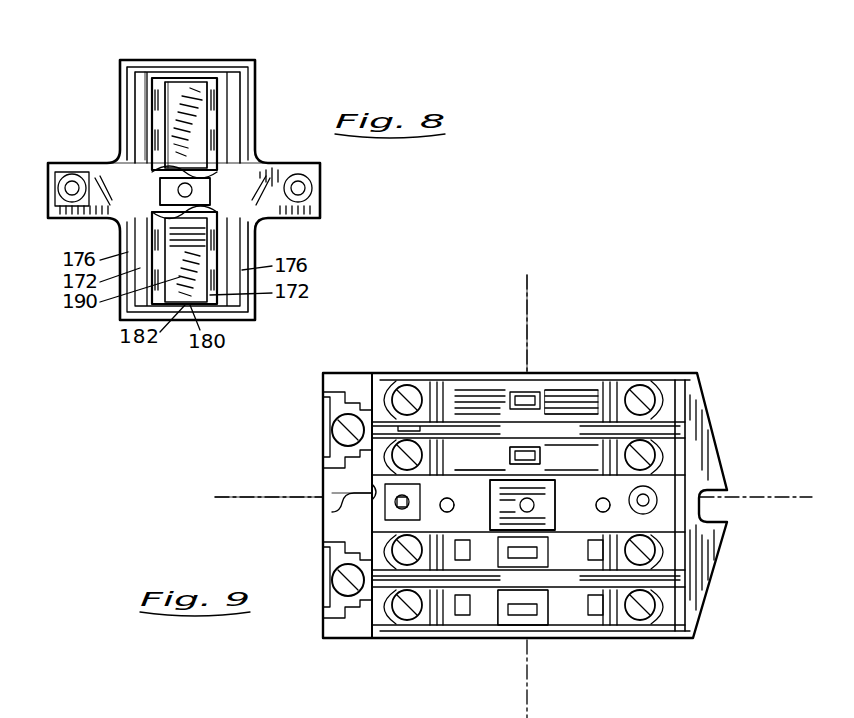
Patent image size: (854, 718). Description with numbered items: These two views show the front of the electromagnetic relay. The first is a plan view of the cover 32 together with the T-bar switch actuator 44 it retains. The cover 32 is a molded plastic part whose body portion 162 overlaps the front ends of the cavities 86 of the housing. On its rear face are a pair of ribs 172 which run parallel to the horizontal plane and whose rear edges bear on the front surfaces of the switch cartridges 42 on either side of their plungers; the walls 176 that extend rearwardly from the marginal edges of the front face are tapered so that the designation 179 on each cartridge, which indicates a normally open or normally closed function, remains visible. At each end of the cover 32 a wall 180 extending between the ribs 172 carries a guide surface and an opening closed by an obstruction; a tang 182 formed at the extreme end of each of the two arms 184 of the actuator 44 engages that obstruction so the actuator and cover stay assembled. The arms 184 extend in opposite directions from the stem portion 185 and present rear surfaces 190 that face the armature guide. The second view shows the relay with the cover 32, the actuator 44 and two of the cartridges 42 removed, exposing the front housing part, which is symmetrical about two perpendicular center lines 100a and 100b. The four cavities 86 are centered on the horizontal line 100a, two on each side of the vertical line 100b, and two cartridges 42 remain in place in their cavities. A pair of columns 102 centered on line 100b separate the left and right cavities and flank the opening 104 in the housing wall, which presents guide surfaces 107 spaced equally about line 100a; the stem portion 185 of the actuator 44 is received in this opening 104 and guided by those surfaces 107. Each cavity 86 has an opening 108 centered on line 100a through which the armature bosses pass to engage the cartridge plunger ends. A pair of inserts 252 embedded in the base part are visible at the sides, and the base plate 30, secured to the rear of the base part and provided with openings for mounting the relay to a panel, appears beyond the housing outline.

In FIG. 8, the arms 184 is at (148, 75).
In FIG. 8, the wall 180 is at (170, 70).
In FIG. 8, the tang 182 is at (190, 72).
In FIG. 8, the walls 176 is at (242, 90).
In FIG. 8, the designation 179 is at (128, 82).
In FIG. 8, the ribs 172 is at (140, 107).
In FIG. 8, the T-bar switch actuator 44 is at (180, 118).
In FIG. 8, the rear surfaces 190 is at (165, 152).
In FIG. 8, the cover 32 is at (280, 165).
In FIG. 8, the stem portion 185 is at (165, 228).
In FIG. 8, the body portion 162 is at (250, 250).
In FIG. 9, the center line 100a is at (527, 311).
In FIG. 9, the center line 100b is at (280, 497).
In FIG. 9, the opening 108 is at (545, 445).
In FIG. 9, the cavities 86 is at (584, 404).
In FIG. 9, the columns 102 is at (461, 484).
In FIG. 9, the guide surfaces 107 is at (493, 520).
In FIG. 9, the opening 104 is at (585, 506).
In FIG. 9, the inserts 252 is at (372, 500).
In FIG. 9, the base plate 30 is at (698, 560).
In FIG. 9, the switch cartridges 42 is at (505, 626).